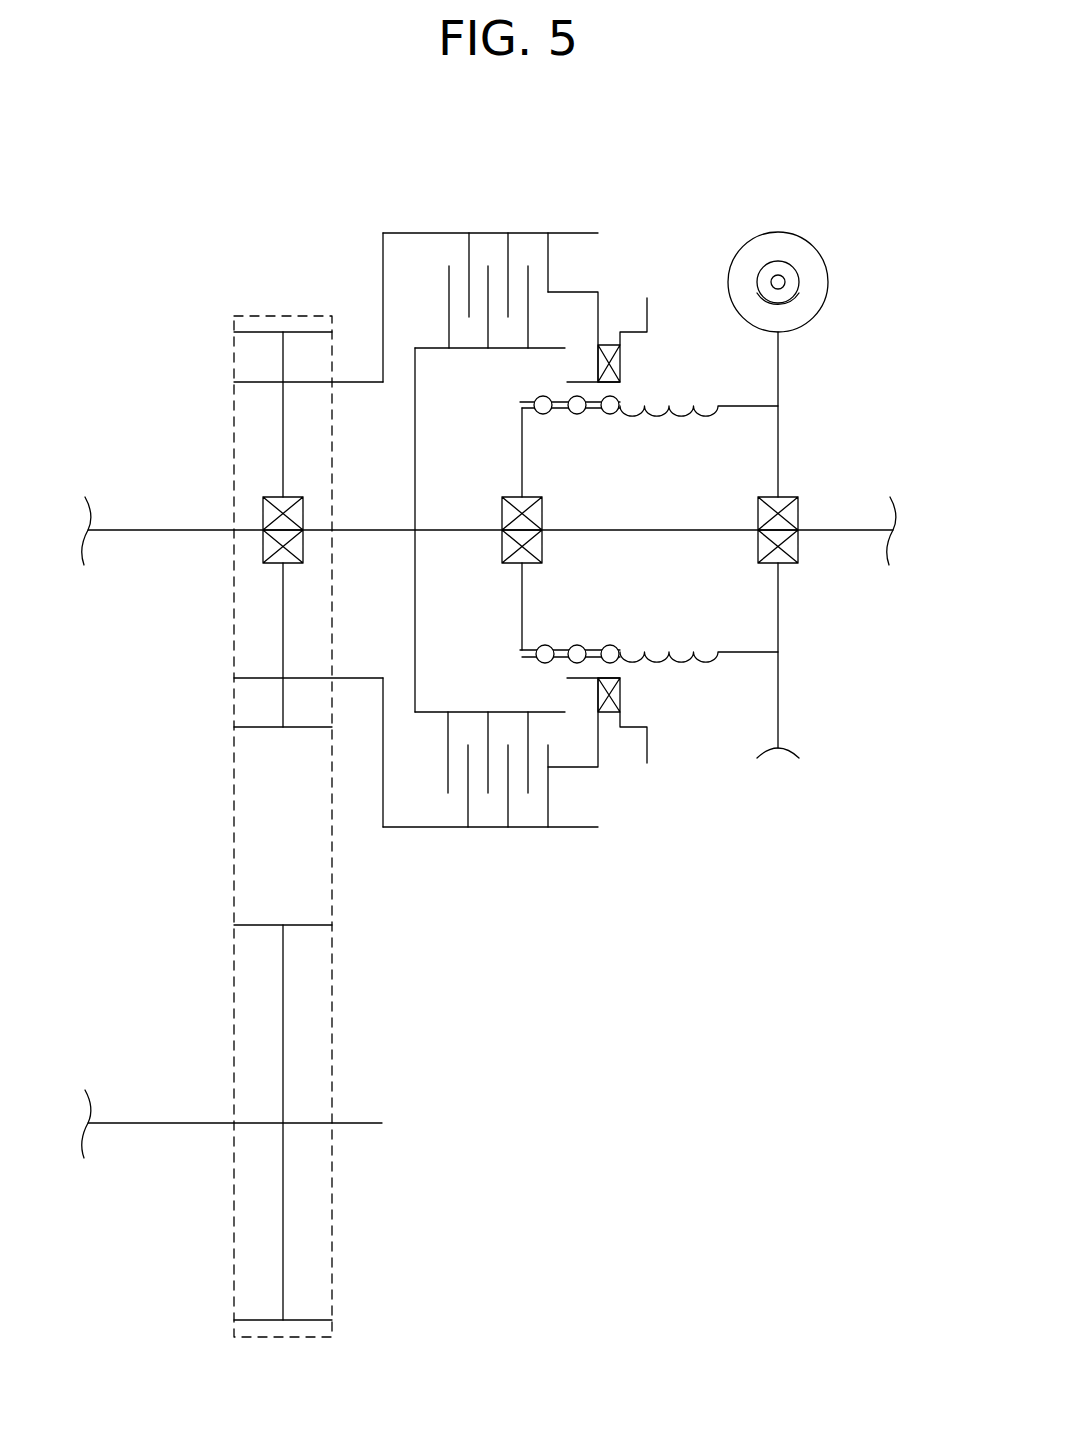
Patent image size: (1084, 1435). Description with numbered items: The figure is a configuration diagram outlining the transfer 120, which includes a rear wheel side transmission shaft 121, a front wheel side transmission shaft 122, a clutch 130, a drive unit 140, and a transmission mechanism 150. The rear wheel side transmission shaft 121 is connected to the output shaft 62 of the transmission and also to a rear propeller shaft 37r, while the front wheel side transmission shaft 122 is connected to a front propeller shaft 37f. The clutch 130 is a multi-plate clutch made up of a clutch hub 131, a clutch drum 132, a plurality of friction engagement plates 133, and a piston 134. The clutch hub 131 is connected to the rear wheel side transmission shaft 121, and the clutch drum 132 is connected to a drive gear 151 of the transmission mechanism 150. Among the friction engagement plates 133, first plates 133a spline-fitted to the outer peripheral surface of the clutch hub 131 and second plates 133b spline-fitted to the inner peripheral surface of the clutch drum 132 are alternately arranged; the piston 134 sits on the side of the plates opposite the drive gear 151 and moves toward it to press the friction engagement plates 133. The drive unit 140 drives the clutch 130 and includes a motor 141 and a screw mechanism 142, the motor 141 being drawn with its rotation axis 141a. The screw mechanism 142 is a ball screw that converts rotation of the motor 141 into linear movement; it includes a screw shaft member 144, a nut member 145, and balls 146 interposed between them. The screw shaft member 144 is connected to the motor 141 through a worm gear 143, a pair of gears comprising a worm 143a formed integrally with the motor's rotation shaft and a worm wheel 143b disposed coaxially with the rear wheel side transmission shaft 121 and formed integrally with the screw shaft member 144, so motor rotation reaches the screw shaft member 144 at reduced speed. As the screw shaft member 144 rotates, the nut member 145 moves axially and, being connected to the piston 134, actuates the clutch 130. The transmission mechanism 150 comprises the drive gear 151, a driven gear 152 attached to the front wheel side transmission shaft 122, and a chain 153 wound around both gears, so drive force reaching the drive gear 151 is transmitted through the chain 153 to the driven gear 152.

The transfer 120 is at (712, 135).
The rear wheel side transmission shaft 121 is at (195, 528).
The front wheel side transmission shaft 122 is at (192, 1120).
The output shaft 62 is at (112, 528).
The rear propeller shaft 37r is at (852, 528).
The front propeller shaft 37f is at (110, 1120).
The clutch 130 is at (540, 196).
The clutch hub 131 is at (462, 350).
The clutch drum 132 is at (467, 231).
The friction engagement plates 133 is at (580, 897).
The first plates 133a is at (528, 780).
The second plates 133b is at (465, 780).
The piston 134 is at (579, 290).
The drive unit 140 is at (826, 166).
The motor 141 is at (805, 250).
The rotor axis 141a is at (790, 282).
The screw mechanism 142 is at (680, 330).
The worm gear 143 is at (832, 325).
The worm 143a is at (783, 260).
The worm wheel 143b is at (780, 372).
The screw shaft member 144 is at (692, 402).
The nut member 145 is at (622, 668).
The balls 146 is at (610, 648).
The transmission mechanism 150 is at (268, 266).
The drive gear 151 is at (298, 330).
The driven gear 152 is at (298, 1322).
The chain 153 is at (234, 792).